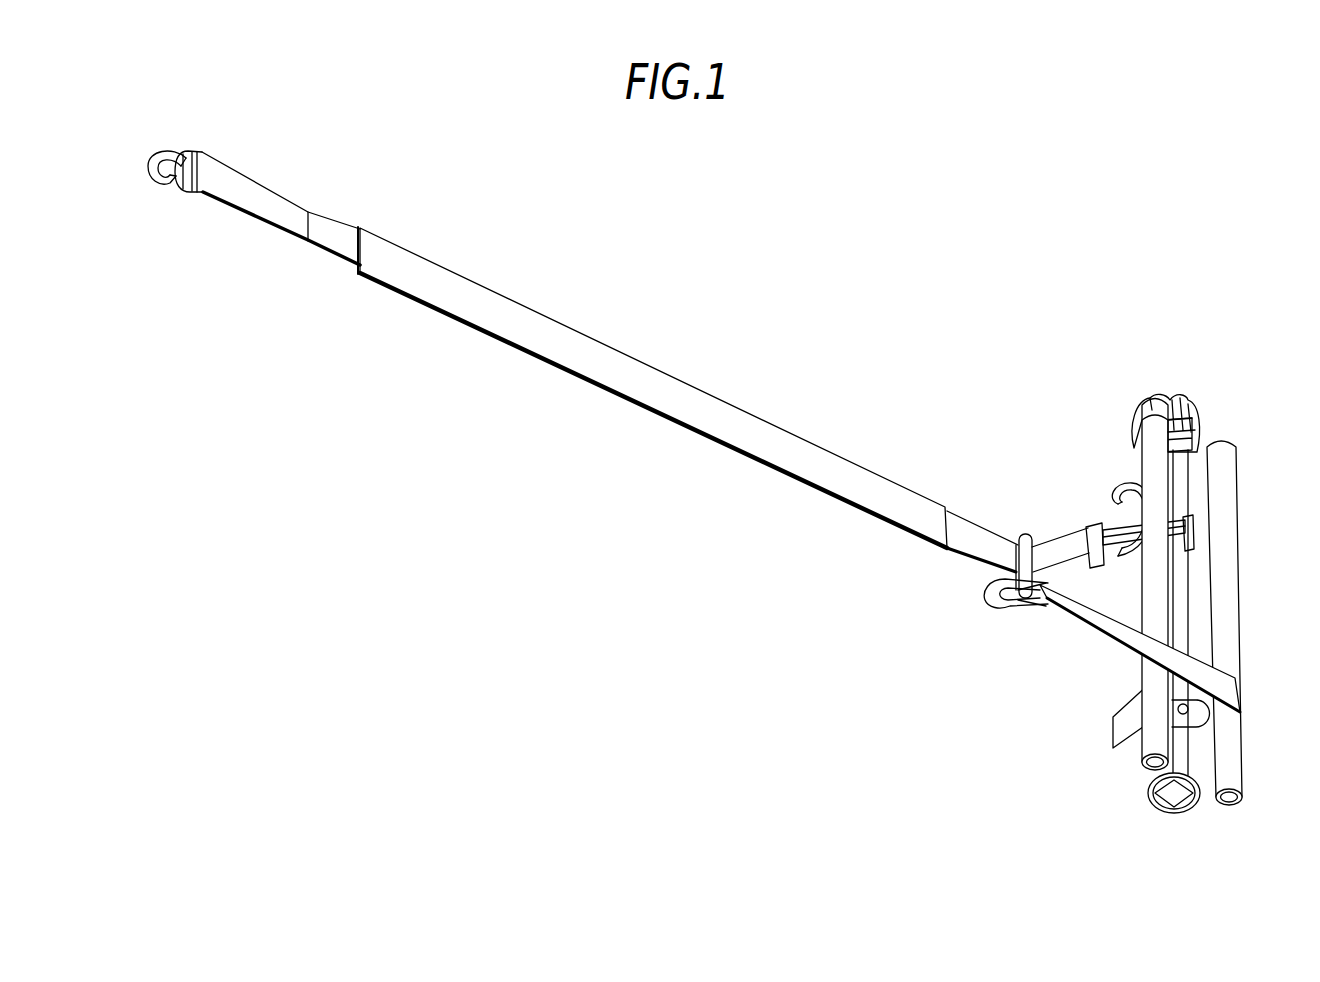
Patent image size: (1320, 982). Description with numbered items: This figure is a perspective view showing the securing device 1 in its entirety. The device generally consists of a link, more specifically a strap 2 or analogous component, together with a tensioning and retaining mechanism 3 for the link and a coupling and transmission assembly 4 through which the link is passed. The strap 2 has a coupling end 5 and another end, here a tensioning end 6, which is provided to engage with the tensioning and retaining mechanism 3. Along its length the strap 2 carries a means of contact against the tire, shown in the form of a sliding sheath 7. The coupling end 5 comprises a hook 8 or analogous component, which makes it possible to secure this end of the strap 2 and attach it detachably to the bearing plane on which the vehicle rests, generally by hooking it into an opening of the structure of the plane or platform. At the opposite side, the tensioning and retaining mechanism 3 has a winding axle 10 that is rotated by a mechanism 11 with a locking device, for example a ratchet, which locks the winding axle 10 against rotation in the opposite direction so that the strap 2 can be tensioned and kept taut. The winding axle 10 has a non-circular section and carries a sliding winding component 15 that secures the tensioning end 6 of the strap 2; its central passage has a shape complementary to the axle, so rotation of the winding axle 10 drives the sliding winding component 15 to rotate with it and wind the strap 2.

The securing device 1 is at (337, 707).
The strap 2 is at (737, 372).
The tensioning and retaining mechanism 3 is at (1078, 395).
The coupling and transmission assembly 4 is at (1002, 632).
The coupling end 5 is at (160, 205).
The tensioning end 6 is at (1198, 733).
The sliding sheath 7 is at (492, 317).
The hook 8 is at (165, 153).
The winding axle 10 is at (1182, 592).
The mechanism with a locking device 11 is at (1210, 408).
The sliding winding component 15 is at (1188, 712).